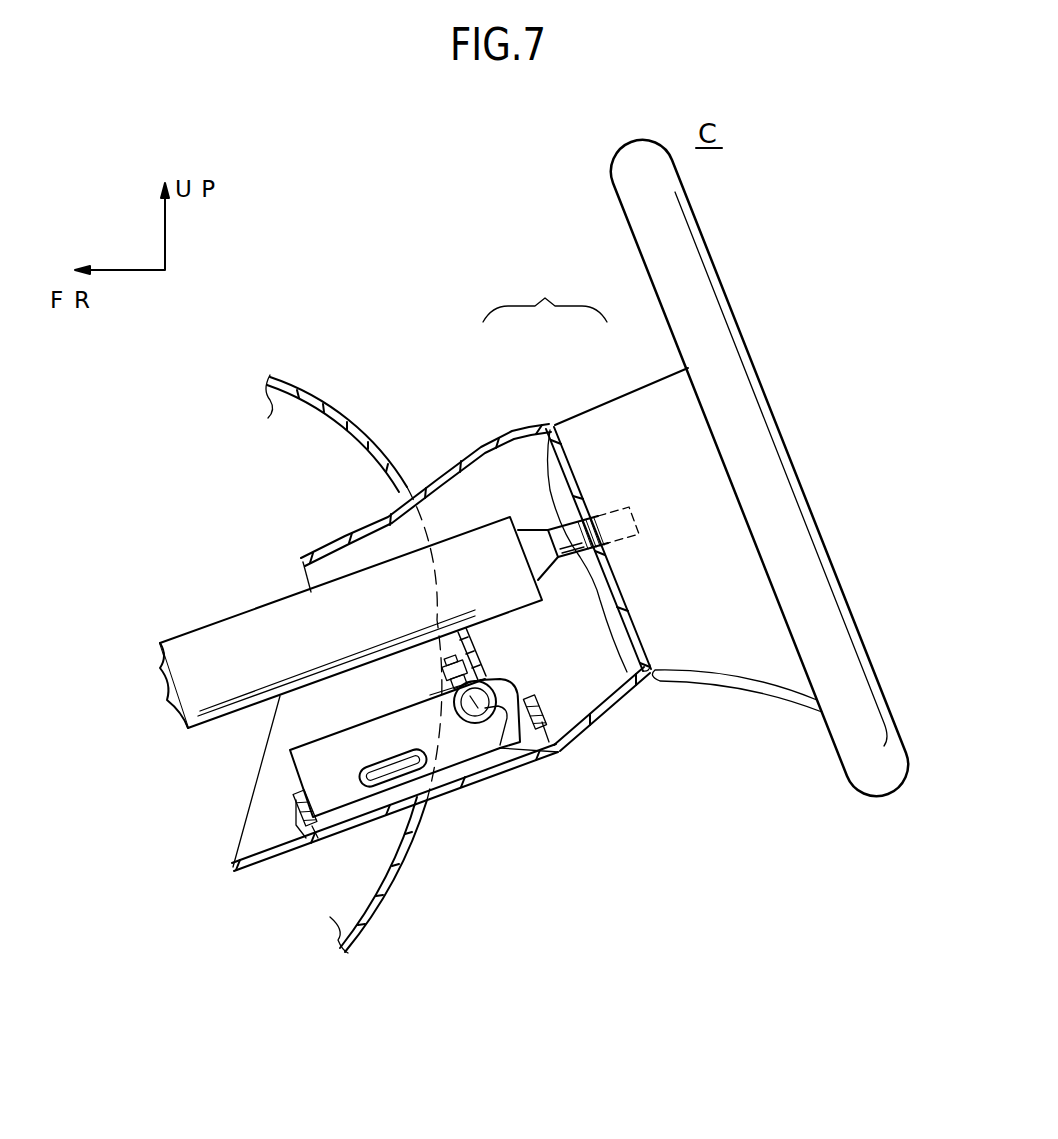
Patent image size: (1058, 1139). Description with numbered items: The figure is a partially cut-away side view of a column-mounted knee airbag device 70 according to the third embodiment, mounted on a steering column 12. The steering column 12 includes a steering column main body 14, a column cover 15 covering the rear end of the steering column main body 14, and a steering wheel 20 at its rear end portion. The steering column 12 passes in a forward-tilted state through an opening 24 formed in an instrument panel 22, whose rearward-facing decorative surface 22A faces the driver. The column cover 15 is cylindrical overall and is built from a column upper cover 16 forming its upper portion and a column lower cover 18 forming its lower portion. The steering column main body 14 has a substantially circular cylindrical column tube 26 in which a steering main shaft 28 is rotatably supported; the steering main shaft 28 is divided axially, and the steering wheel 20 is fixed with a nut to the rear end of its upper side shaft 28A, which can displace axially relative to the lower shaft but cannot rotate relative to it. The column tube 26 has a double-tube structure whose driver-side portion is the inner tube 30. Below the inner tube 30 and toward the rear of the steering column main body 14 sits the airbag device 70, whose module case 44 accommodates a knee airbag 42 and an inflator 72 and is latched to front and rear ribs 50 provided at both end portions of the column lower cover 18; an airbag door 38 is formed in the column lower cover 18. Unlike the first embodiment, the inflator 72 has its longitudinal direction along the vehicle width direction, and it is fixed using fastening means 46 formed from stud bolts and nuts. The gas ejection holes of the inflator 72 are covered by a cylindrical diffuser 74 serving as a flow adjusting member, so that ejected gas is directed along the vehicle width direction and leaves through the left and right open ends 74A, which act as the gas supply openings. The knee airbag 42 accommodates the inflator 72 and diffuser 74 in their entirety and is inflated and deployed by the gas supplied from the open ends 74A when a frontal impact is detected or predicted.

The steering column 12 is at (725, 246).
The steering column main body 14 is at (263, 592).
The column cover 15 is at (545, 297).
The column upper cover 16 is at (513, 427).
The column lower cover 18 is at (550, 427).
The steering wheel 20 is at (760, 434).
The instrument panel 22 is at (373, 428).
The decorative surface 22A is at (407, 857).
The opening 24 is at (405, 492).
The column tube 26 is at (230, 652).
The steering main shaft 28 is at (627, 473).
The upper side shaft 28A is at (607, 512).
The inner tube 30 is at (343, 622).
The airbag door 38 is at (447, 792).
The knee airbag 42 is at (498, 745).
The module case 44 is at (297, 775).
The fastening means 46 is at (455, 662).
The ribs 50 is at (550, 713).
The column-mounted knee airbag device 70 is at (560, 864).
The inflator 72 is at (480, 698).
The diffuser 74 is at (513, 703).
The open ends 74A is at (527, 757).